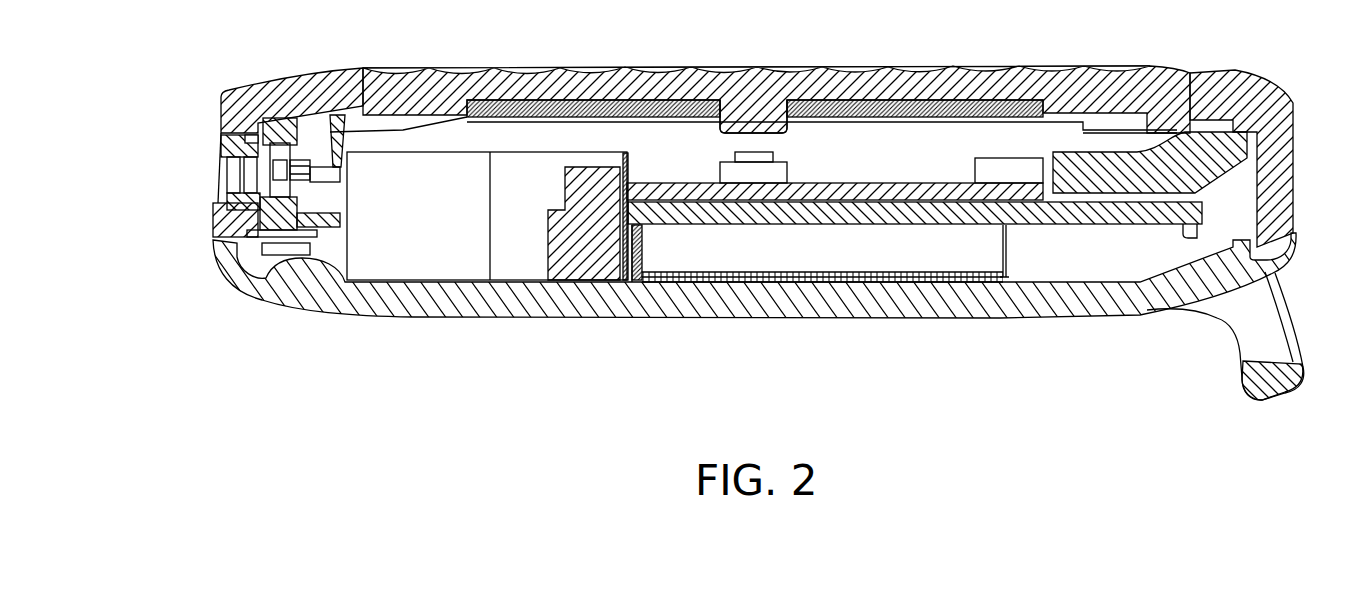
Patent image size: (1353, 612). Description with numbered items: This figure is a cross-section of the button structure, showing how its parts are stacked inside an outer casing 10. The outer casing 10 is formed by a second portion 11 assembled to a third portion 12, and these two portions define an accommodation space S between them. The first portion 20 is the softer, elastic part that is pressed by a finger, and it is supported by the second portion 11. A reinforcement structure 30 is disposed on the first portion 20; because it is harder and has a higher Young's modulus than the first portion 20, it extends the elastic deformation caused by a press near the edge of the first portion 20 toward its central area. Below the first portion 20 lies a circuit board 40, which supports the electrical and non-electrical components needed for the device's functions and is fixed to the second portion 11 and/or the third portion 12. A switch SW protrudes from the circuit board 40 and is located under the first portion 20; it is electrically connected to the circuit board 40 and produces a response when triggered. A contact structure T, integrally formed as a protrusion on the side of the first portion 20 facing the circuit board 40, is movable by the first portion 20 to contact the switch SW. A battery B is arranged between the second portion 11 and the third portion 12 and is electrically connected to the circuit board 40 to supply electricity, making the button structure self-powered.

The outer casing 10 is at (145, 101).
The second portion 11 is at (238, 111).
The third portion 12 is at (253, 285).
The first portion 20 is at (945, 74).
The reinforcement structure 30 is at (984, 140).
The circuit board 40 is at (878, 193).
The battery B is at (444, 238).
The switch SW is at (763, 170).
The contact structure T is at (743, 117).
The accommodation space S is at (1043, 138).